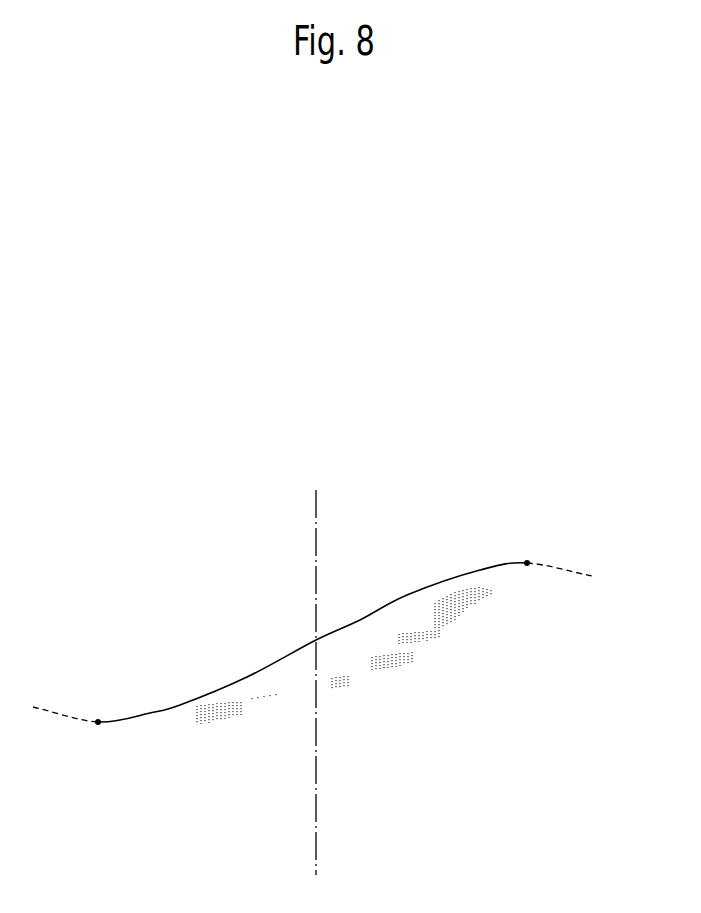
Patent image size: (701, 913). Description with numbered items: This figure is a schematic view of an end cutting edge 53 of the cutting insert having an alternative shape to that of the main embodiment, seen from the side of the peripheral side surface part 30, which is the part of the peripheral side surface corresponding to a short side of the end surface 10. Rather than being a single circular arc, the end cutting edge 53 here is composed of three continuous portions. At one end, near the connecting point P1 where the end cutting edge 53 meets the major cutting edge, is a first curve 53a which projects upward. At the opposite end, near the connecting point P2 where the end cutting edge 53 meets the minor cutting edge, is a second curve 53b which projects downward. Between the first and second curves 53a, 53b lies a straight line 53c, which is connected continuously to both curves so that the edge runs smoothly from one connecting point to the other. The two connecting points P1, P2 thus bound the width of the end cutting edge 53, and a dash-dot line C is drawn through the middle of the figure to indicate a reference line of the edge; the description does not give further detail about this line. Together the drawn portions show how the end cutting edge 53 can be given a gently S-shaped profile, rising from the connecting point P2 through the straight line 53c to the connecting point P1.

The end surface 10 is at (463, 512).
The peripheral side surface part 30 is at (407, 603).
The end cutting edge 53 is at (252, 612).
The first curve 53a is at (492, 563).
The second curve 53b is at (150, 713).
The straight line 53c is at (360, 605).
The center line C is at (314, 660).
The connecting point P1 is at (532, 560).
The connecting point P2 is at (98, 720).